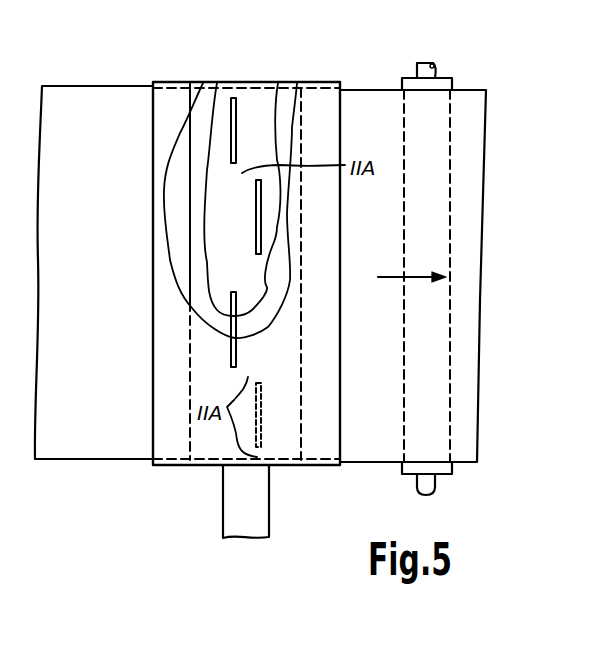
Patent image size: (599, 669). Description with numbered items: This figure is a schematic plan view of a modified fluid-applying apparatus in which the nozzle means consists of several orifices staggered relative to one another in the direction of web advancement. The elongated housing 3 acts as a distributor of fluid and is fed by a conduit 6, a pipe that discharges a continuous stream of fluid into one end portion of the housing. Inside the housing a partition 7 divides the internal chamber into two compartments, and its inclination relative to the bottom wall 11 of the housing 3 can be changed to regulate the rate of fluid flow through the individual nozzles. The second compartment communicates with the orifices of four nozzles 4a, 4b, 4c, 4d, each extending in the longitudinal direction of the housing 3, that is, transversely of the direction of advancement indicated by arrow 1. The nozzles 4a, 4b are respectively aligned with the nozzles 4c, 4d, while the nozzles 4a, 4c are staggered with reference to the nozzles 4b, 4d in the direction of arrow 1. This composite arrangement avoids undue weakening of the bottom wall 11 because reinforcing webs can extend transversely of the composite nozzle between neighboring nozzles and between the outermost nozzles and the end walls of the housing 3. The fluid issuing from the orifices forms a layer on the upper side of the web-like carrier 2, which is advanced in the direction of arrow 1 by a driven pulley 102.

The arrow 1 is at (408, 277).
The web-like carrier 2 is at (462, 147).
The housing 3 is at (138, 413).
The nozzle 4a is at (231, 149).
The nozzle 4b is at (256, 228).
The nozzle 4c is at (231, 346).
The nozzle 4d is at (262, 423).
The conduit 6 is at (238, 505).
The partition 7 is at (258, 112).
The bottom wall 11 is at (265, 308).
The pulley 102 is at (442, 77).